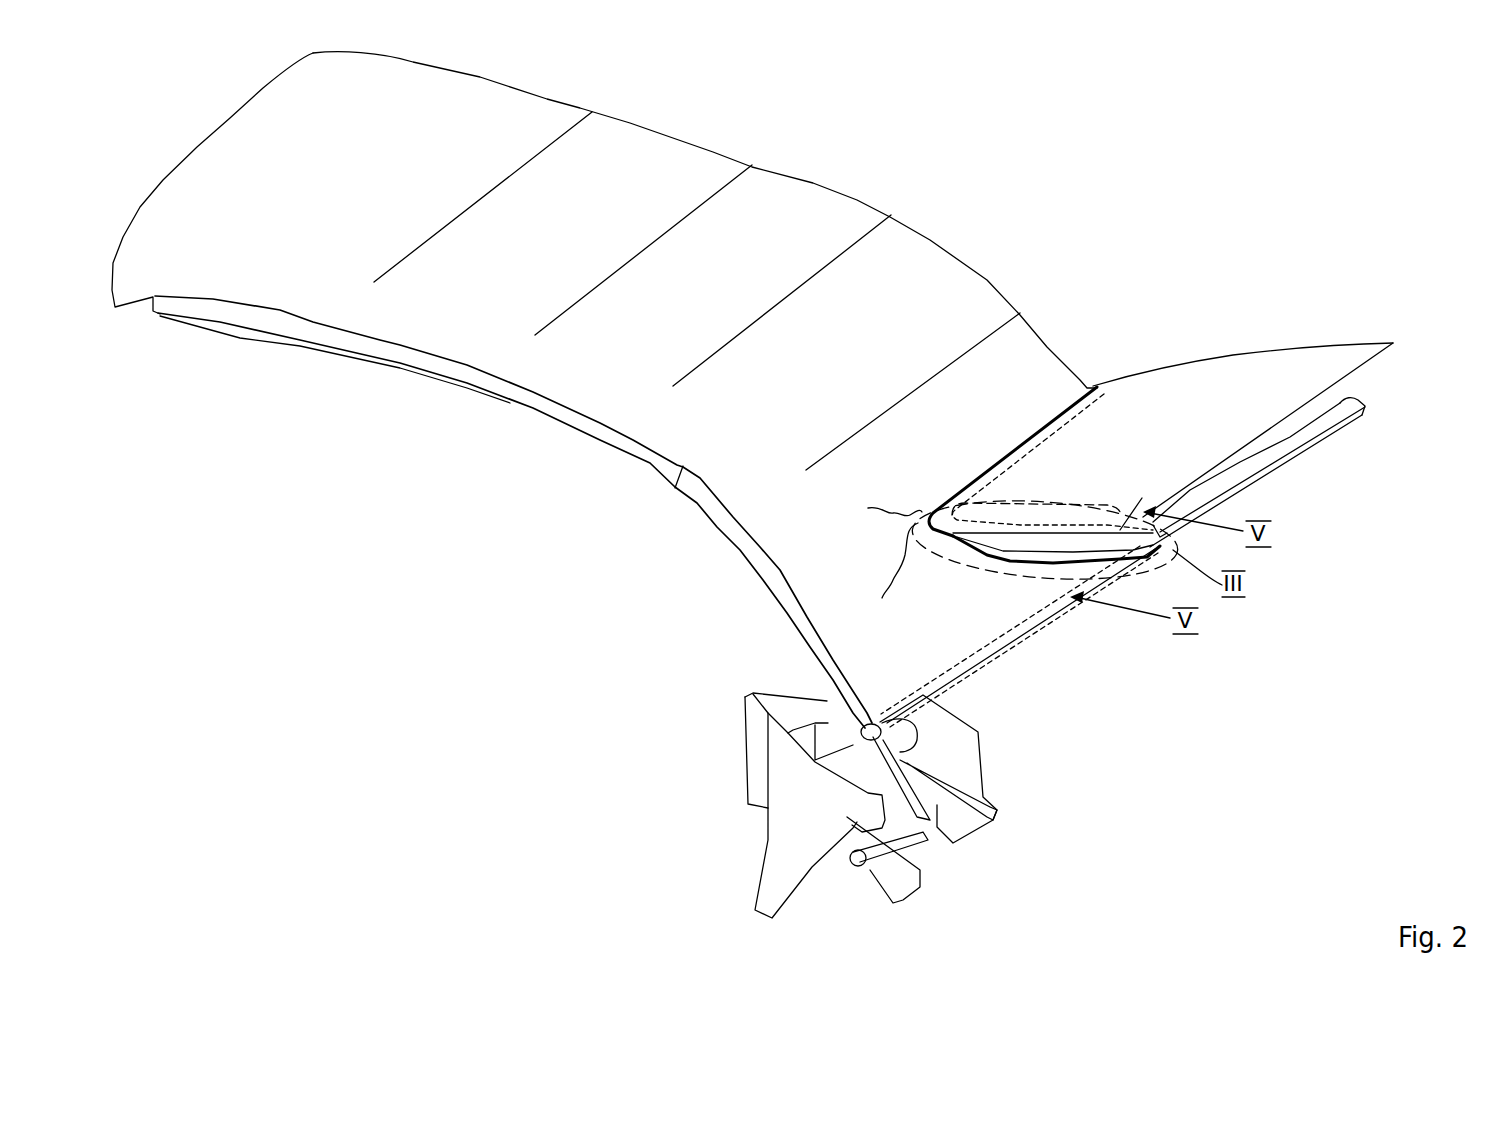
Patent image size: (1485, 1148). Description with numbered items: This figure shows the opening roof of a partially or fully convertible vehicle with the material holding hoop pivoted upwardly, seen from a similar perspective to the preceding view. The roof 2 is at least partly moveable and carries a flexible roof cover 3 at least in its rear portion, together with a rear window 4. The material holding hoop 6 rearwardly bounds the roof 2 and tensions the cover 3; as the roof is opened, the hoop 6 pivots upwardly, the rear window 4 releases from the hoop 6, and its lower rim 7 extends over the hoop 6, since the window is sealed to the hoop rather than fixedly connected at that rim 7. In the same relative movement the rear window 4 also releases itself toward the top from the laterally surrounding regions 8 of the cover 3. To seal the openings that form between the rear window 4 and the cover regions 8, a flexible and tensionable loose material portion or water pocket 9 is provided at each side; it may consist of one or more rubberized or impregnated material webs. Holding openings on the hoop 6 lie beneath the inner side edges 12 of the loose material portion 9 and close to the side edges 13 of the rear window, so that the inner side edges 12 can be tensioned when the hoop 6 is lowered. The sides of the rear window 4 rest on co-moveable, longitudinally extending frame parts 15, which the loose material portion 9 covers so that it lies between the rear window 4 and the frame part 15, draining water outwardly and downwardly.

The roof 2 is at (739, 146).
The flexible roof cover 3 is at (907, 248).
The rear window 4 is at (1212, 403).
The material holding hoop 6 is at (1268, 473).
The lower rim 7 is at (1236, 437).
The laterally surrounding regions 8 is at (973, 557).
The loose material portion 9 is at (1047, 556).
The inner side edges 12 is at (1026, 555).
The side edges 13 is at (1051, 511).
The frame part 15 is at (983, 530).